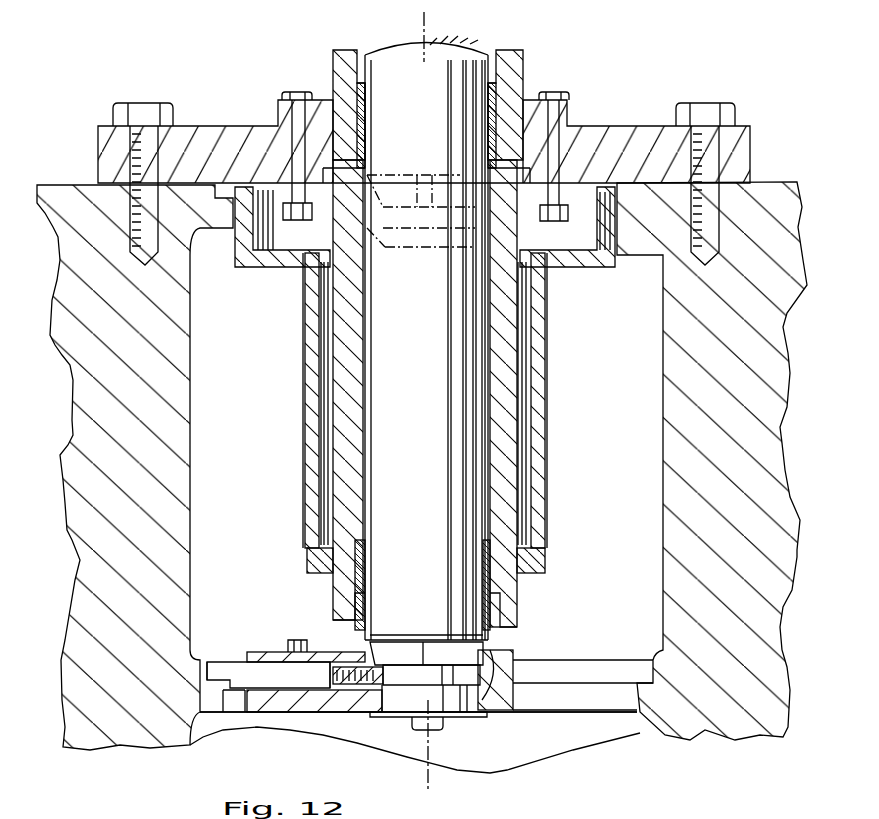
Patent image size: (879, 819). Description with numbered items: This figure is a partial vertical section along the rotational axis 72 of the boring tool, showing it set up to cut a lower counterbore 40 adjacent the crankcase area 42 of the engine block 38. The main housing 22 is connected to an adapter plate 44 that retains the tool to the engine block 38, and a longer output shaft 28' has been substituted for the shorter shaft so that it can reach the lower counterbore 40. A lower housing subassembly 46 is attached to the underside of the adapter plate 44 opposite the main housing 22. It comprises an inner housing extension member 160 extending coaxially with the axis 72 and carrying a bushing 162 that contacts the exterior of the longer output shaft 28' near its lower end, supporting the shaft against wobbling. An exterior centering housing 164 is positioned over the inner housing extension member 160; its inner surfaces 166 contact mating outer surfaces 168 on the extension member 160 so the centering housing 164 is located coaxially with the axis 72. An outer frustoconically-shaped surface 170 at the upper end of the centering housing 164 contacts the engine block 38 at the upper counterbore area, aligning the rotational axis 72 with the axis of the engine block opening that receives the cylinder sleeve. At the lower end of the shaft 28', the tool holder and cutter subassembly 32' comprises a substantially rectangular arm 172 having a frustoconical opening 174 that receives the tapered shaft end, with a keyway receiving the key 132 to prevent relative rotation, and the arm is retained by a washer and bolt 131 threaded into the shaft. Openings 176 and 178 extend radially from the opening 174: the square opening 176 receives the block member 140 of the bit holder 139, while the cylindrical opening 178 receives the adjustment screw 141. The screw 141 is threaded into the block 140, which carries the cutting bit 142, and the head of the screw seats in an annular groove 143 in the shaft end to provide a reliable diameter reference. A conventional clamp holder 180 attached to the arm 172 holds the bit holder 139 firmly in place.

The main housing 22 is at (513, 76).
The longer output shaft 28' is at (426, 338).
The tool holder and cutter subassembly 32' is at (418, 740).
The engine block 38 is at (773, 625).
The lower counterbore 40 is at (647, 657).
The crankcase area 42 is at (660, 720).
The adapter plate 44 is at (612, 126).
The lower housing subassembly 46 is at (548, 325).
The rotational axis 72 is at (422, 20).
The washer and bolt 131 is at (440, 727).
The key 132 is at (428, 647).
The bit holder 139 is at (227, 657).
The block member 140 is at (292, 683).
The adjustment screw 141 is at (330, 710).
The cutting bit 142 is at (217, 690).
The annular groove 143 is at (402, 677).
The inner housing extension member 160 is at (510, 432).
The bushing 162 is at (505, 612).
The exterior centering housing 164 is at (545, 382).
The inner surfaces 166 is at (320, 280).
The outer surfaces 168 is at (313, 298).
The outer frustoconically-shaped surface 170 is at (640, 263).
The arm 172 is at (253, 713).
The frustoconical opening 174 is at (510, 710).
The square opening 176 is at (257, 650).
The cylindrical opening 178 is at (358, 662).
The clamp holder 180 is at (305, 638).